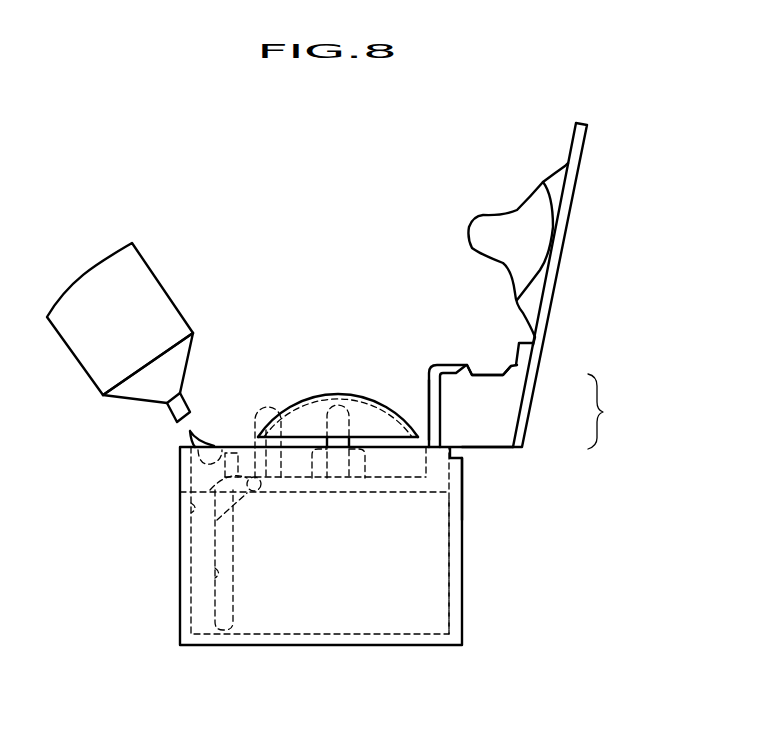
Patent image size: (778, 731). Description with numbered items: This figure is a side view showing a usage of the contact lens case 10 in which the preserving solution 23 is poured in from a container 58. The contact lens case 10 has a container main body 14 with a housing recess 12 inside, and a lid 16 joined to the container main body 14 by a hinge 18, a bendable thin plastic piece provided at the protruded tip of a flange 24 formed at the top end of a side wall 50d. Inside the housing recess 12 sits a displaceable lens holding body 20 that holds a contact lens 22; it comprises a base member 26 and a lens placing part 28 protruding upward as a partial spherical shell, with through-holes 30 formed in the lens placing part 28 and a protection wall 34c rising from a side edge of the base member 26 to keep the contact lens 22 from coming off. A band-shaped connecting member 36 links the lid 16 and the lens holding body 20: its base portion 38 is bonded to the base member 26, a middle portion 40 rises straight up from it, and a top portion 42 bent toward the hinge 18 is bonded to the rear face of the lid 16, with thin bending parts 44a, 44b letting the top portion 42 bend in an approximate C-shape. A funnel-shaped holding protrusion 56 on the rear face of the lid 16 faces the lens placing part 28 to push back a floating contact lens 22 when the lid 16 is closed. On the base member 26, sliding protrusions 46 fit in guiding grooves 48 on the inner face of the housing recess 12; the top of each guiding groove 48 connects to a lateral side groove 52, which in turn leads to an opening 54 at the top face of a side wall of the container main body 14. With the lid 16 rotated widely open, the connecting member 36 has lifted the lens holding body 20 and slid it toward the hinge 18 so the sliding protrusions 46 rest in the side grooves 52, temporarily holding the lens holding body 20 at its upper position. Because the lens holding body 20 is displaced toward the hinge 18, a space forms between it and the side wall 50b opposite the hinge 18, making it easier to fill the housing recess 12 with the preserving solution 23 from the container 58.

The contact lens case 10 is at (580, 102).
The housing recess 12 is at (193, 518).
The container main body 14 is at (469, 553).
The lid 16 is at (546, 293).
The hinge 18 is at (510, 450).
The lens holding body 20 is at (407, 494).
The contact lens 22 is at (373, 422).
The preserving solution 23 is at (203, 440).
The flange 24 is at (478, 455).
The base member 26 is at (297, 480).
The lens placing part 28 is at (302, 416).
The through-hole 30 is at (348, 398).
The protection wall 34c is at (355, 465).
The connecting member 36 is at (607, 411).
The base portion 38 is at (442, 465).
The middle portion 40 is at (433, 408).
The top portion 42 is at (488, 373).
The bending part 44a is at (467, 365).
The bending part 44b is at (512, 365).
The sliding protrusion 46 is at (247, 487).
The guiding groove 48 is at (213, 587).
The side wall 50b is at (185, 565).
The side wall 50d is at (457, 602).
The side groove 52 is at (180, 492).
The opening 54 is at (277, 425).
The holding protrusion 56 is at (495, 233).
The container 58 is at (162, 307).